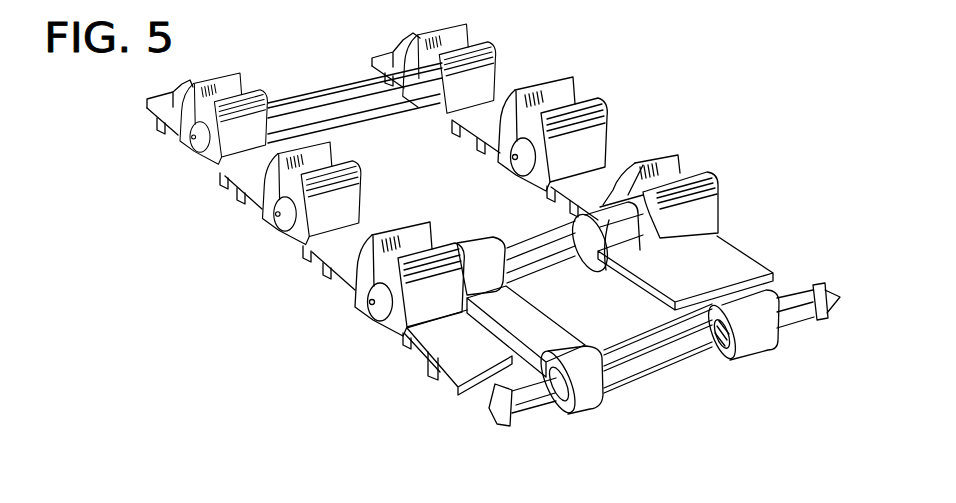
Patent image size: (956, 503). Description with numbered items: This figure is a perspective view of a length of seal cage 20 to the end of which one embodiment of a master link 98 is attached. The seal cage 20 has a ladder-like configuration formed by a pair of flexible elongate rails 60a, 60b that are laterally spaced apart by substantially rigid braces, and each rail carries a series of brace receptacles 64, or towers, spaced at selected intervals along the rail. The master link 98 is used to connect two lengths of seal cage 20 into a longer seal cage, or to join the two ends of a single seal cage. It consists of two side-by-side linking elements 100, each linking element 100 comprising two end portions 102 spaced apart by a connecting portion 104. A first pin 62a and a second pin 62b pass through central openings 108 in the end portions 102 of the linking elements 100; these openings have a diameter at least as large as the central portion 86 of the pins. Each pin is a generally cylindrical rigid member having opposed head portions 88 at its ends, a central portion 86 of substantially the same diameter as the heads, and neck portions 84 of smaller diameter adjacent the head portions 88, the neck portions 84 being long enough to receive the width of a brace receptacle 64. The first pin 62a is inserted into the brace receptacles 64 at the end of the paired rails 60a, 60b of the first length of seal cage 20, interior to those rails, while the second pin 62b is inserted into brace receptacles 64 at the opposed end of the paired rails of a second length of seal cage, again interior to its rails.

The seal cage 20 is at (156, 248).
The first paired rail 60a is at (205, 162).
The second paired rail 60b is at (575, 125).
The first brace or pin 62a is at (540, 243).
The second brace or pin 62b is at (657, 340).
The brace receptacle 64 is at (425, 287).
The neck portion 84 is at (523, 418).
The central portion 86 is at (660, 366).
The head portion 88 is at (498, 410).
The master link 98 is at (485, 327).
The linking element 100 is at (623, 202).
The end portion 102 is at (630, 222).
The connecting portion 104 is at (687, 277).
The central opening 108 is at (556, 412).